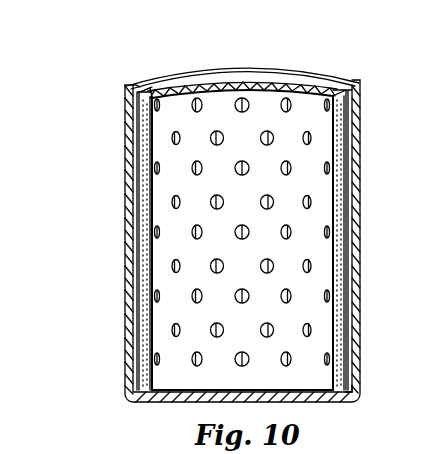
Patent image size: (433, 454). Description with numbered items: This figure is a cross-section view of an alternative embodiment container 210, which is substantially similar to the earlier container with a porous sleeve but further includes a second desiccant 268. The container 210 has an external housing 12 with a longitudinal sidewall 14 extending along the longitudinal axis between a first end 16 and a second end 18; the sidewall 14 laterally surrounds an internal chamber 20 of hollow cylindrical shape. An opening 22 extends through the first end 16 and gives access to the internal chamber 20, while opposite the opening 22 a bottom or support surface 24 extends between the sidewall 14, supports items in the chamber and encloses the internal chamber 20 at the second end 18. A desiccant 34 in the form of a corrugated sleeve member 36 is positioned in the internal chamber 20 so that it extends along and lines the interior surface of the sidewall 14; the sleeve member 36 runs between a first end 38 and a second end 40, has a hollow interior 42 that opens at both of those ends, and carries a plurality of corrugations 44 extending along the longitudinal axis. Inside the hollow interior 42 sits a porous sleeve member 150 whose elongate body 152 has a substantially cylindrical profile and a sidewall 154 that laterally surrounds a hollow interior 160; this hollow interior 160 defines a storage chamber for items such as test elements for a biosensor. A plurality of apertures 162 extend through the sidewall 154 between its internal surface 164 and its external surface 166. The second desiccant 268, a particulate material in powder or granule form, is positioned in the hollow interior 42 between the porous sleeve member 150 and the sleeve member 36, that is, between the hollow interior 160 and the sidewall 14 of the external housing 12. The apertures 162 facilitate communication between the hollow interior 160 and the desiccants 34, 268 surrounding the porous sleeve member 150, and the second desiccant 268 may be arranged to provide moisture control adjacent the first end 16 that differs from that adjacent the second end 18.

The container 210 is at (86, 100).
The external housing 12 is at (235, 253).
The longitudinal sidewall 14 is at (136, 82).
The first end 16 is at (127, 86).
The second end 18 is at (357, 402).
The internal chamber 20 is at (350, 123).
The opening 22 is at (236, 54).
The support surface 24 is at (165, 403).
The desiccant 34 is at (372, 240).
The sleeve member 36 is at (125, 223).
The first end 38 is at (358, 95).
The second end 40 is at (346, 393).
The hollow interior 42 is at (144, 90).
The corrugations 44 is at (245, 100).
The porous sleeve member 150 is at (347, 167).
The elongate body 152 is at (146, 133).
The sidewall 154 is at (268, 80).
The hollow interior 160 is at (272, 268).
The apertures 162 is at (266, 210).
The internal surface 164 is at (155, 338).
The external surface 166 is at (343, 255).
The second desiccant 268 is at (147, 165).